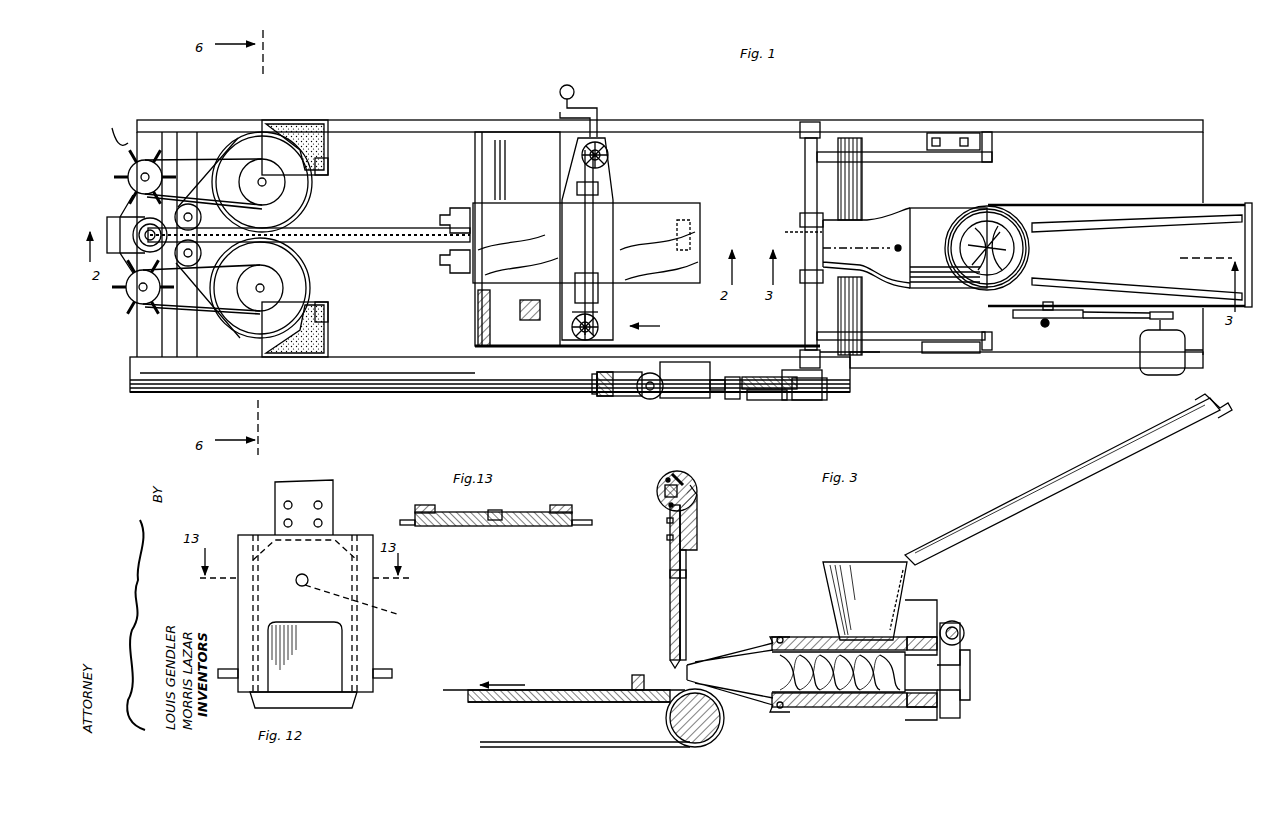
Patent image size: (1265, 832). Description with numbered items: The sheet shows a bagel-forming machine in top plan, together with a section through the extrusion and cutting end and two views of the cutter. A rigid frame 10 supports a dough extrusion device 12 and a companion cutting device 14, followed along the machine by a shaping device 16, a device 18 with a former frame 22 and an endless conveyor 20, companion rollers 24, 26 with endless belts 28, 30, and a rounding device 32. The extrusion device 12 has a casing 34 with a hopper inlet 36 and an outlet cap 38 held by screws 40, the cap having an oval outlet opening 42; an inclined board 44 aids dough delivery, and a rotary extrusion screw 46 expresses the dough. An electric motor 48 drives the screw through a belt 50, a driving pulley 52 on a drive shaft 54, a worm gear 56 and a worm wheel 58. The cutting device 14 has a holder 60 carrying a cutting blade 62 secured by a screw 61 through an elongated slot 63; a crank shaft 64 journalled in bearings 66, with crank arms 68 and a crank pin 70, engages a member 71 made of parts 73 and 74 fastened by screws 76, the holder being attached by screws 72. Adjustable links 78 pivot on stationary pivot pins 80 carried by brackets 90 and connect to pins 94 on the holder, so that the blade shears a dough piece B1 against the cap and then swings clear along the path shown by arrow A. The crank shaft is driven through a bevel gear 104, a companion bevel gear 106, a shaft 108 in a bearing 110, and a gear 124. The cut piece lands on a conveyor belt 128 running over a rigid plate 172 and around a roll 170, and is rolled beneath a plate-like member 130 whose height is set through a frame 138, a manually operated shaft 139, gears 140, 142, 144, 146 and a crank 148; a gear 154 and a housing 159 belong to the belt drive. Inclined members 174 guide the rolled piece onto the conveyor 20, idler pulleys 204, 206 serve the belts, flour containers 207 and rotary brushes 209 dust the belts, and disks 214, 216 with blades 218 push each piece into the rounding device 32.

In FIG. 1, the frame 10 is at (455, 368).
In FIG. 1, the dough extrusion device 12 is at (930, 198).
In FIG. 3, the dough extrusion device 12 is at (793, 570).
In FIG. 1, the cutting device 14 is at (800, 225).
In FIG. 1, the shaping device 16 is at (625, 215).
In FIG. 1, the device (former frame and conveyor) 18 is at (388, 215).
In FIG. 1, the endless conveyor 20 is at (370, 228).
In FIG. 1, the former frame 22 is at (385, 242).
In FIG. 1, the roller (pulley) 24 is at (300, 200).
In FIG. 1, the roller (pulley) 26 is at (296, 275).
In FIG. 1, the endless belt 28 is at (305, 215).
In FIG. 1, the endless belt 30 is at (298, 258).
In FIG. 1, the rounding device 32 is at (107, 210).
In FIG. 1, the casing 34 is at (935, 288).
In FIG. 3, the casing 34 is at (835, 707).
In FIG. 1, the hopper inlet 36 is at (978, 285).
In FIG. 3, the hopper inlet 36 is at (905, 575).
In FIG. 1, the dough-shaping outlet cap 38 is at (888, 210).
In FIG. 3, the dough-shaping outlet cap 38 is at (740, 640).
In FIG. 1, the screws 40 is at (895, 255).
In FIG. 3, the screws 40 is at (780, 637).
In FIG. 1, the outlet opening 42 is at (789, 233).
In FIG. 3, the outlet opening 42 is at (705, 660).
In FIG. 1, the inclined board 44 is at (1090, 218).
In FIG. 3, the inclined board 44 is at (1060, 485).
In FIG. 1, the rotary extrusion screw 46 is at (1000, 228).
In FIG. 3, the rotary extrusion screw 46 is at (870, 692).
In FIG. 1, the electric motor 48 is at (1160, 375).
In FIG. 1, the belt 50 is at (1105, 322).
In FIG. 1, the driving pulley 52 is at (1050, 322).
In FIG. 1, the drive shaft 54 is at (1045, 327).
In FIG. 3, the drive shaft 54 is at (964, 633).
In FIG. 3, the worm gear 56 is at (958, 622).
In FIG. 3, the worm wheel 58 is at (955, 718).
In FIG. 12, the holder 60 is at (378, 600).
In FIG. 13, the screw 61 is at (480, 512).
In FIG. 3, the screw 61 is at (686, 570).
In FIG. 12, the cutting blade 62 is at (362, 700).
In FIG. 13, the cutting blade 62 is at (532, 510).
In FIG. 3, the cutting blade 62 is at (688, 600).
In FIG. 12, the elongated slot 63 is at (362, 600).
In FIG. 13, the elongated slot 63 is at (495, 520).
In FIG. 3, the elongated slot 63 is at (686, 574).
In FIG. 1, the crank shaft 64 is at (840, 360).
In FIG. 1, the bearings 66 is at (820, 125).
In FIG. 1, the crank arms 68 is at (803, 215).
In FIG. 3, the crank pin 70 is at (693, 480).
In FIG. 3, the member 71 is at (700, 493).
In FIG. 12, the screws 72 is at (255, 522).
In FIG. 3, the screws 72 is at (667, 522).
In FIG. 12, the part of member 71 73 is at (275, 490).
In FIG. 3, the part of member 71 73 is at (684, 480).
In FIG. 3, the part of member 71 74 is at (662, 492).
In FIG. 3, the screws 76 is at (668, 478).
In FIG. 1, the adjustable links 78 is at (880, 152).
In FIG. 1, the stationary pivot pins 80 is at (992, 150).
In FIG. 1, the stationary brackets 90 is at (955, 133).
In FIG. 12, the pins 94 is at (225, 678).
In FIG. 13, the pins 94 is at (412, 525).
In FIG. 1, the bevel gear 104 is at (620, 396).
In FIG. 1, the bevel gear 106 is at (650, 399).
In FIG. 1, the shaft 108 is at (735, 399).
In FIG. 1, the bearing 110 is at (690, 398).
In FIG. 1, the gear 124 is at (810, 390).
In FIG. 1, the endless conveyor belt 128 is at (698, 160).
In FIG. 3, the endless conveyor belt 128 is at (592, 688).
In FIG. 1, the stationary plate-like member 130 is at (515, 200).
In FIG. 1, the frame 138 is at (610, 175).
In FIG. 1, the manually operated shaft 139 is at (600, 265).
In FIG. 1, the gear 140 is at (600, 180).
In FIG. 1, the gear 142 is at (582, 152).
In FIG. 1, the gear 144 is at (575, 330).
In FIG. 1, the gear 146 is at (590, 340).
In FIG. 1, the crank 148 is at (570, 85).
In FIG. 1, the gear 154 is at (595, 394).
In FIG. 1, the housing 159 is at (393, 385).
In FIG. 3, the roll 170 is at (718, 735).
In FIG. 3, the rigid plate 172 is at (560, 705).
In FIG. 1, the downwardly inclined members 174 is at (455, 208).
In FIG. 1, the idler pulley 204 is at (200, 217).
In FIG. 1, the idler pulley 206 is at (200, 253).
In FIG. 1, the flour containers 207 is at (315, 120).
In FIG. 1, the rotary brushes 209 is at (326, 150).
In FIG. 1, the disk 214 is at (150, 160).
In FIG. 1, the disk 216 is at (130, 295).
In FIG. 1, the blades 218 is at (110, 126).
In FIG. 1, the dough piece B1 is at (690, 220).
In FIG. 3, the dough piece B1 is at (638, 675).
In FIG. 3, the arrow A is at (673, 677).